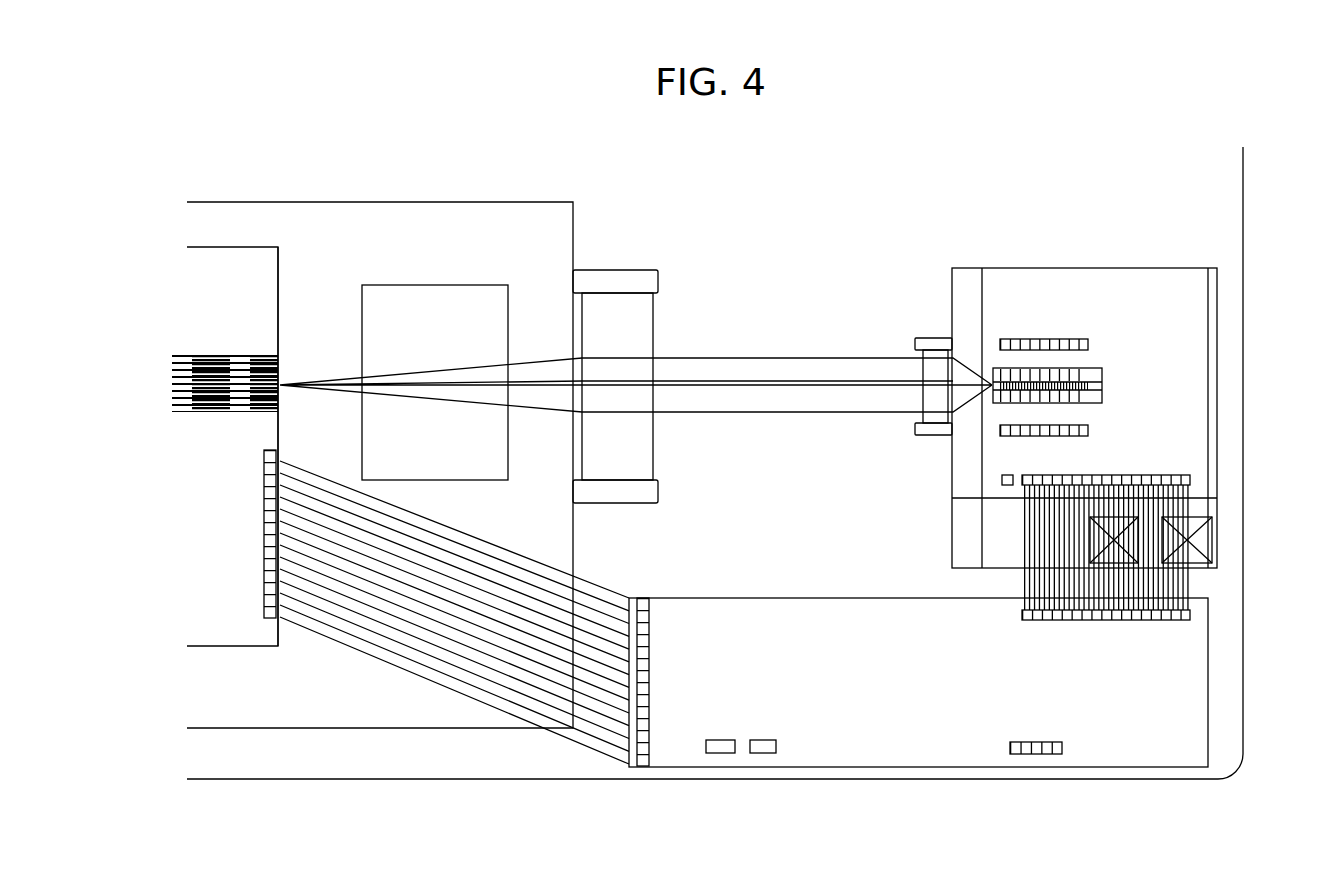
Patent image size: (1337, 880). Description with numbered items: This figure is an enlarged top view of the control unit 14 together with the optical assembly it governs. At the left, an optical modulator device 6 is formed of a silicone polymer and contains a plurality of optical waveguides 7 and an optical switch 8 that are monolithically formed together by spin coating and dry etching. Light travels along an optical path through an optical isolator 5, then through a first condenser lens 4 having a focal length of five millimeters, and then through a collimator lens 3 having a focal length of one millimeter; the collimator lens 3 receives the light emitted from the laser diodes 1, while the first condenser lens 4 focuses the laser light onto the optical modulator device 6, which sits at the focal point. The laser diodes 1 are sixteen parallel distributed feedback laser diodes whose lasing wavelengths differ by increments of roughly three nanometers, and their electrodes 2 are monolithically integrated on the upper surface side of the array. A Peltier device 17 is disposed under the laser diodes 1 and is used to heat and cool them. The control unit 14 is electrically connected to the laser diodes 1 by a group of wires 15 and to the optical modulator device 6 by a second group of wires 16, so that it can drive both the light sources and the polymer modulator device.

The laser diodes 1 is at (1102, 386).
The electrodes 2 is at (1102, 375).
The collimator lens 3 is at (931, 280).
The first condenser lens 4 is at (612, 275).
The optical isolator 5 is at (440, 302).
The optical modulator device 6 is at (212, 355).
The optical waveguides 7 is at (279, 288).
The optical switch 8 is at (264, 355).
The control unit 14 is at (1183, 678).
The group of wires 15 is at (1187, 582).
The group of wires 16 is at (607, 748).
The Peltier device 17 is at (1101, 275).